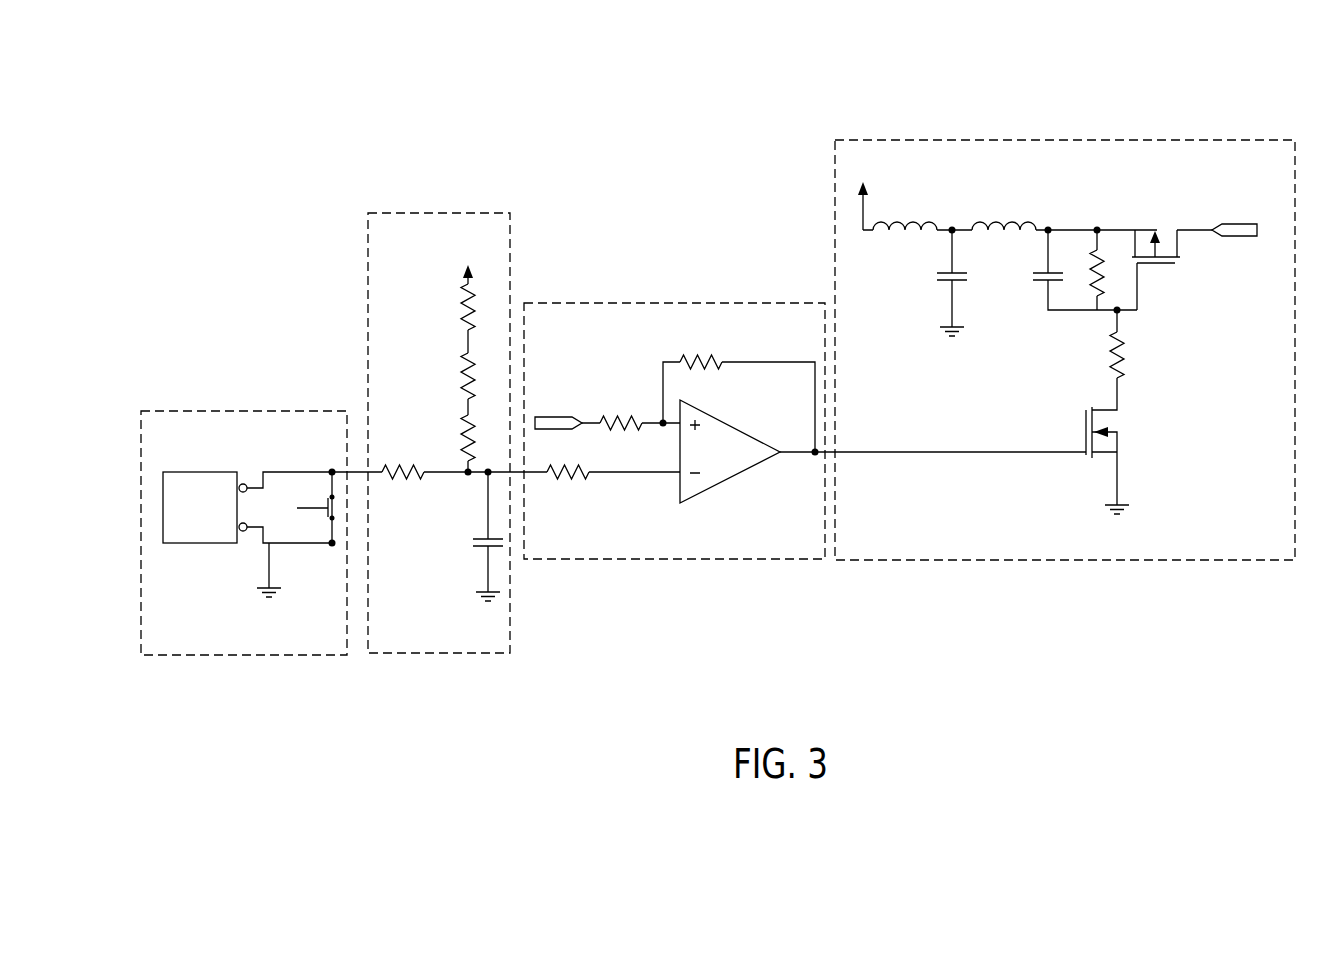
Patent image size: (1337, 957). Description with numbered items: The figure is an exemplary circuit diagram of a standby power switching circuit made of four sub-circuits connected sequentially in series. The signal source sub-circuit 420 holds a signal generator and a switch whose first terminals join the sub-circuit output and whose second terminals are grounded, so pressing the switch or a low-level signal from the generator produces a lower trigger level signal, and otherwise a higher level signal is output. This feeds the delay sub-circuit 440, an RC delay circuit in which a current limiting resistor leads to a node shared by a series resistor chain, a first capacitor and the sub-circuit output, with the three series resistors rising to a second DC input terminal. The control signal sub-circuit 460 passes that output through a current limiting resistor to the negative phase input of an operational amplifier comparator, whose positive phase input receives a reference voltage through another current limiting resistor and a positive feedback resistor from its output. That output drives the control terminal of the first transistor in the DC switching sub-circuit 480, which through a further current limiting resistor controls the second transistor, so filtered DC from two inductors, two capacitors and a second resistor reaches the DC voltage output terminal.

The signal source sub-circuit 420 is at (193, 411).
The delay sub-circuit 440 is at (422, 213).
The control signal sub-circuit 460 is at (606, 303).
The DC switching sub-circuit 480 is at (908, 140).